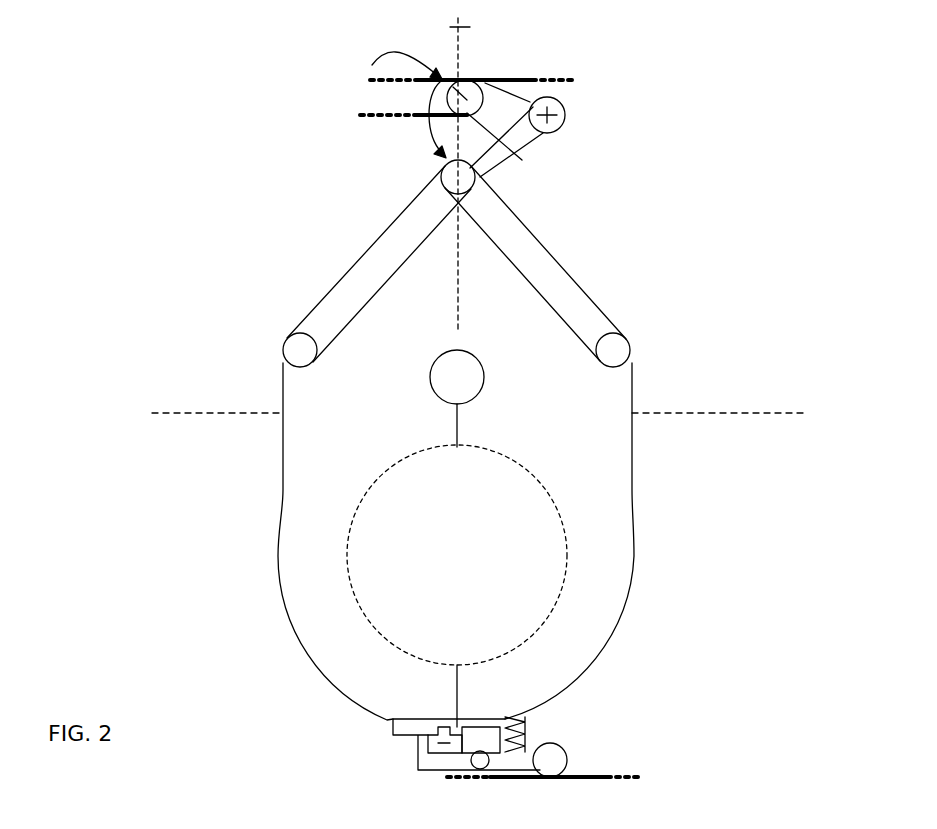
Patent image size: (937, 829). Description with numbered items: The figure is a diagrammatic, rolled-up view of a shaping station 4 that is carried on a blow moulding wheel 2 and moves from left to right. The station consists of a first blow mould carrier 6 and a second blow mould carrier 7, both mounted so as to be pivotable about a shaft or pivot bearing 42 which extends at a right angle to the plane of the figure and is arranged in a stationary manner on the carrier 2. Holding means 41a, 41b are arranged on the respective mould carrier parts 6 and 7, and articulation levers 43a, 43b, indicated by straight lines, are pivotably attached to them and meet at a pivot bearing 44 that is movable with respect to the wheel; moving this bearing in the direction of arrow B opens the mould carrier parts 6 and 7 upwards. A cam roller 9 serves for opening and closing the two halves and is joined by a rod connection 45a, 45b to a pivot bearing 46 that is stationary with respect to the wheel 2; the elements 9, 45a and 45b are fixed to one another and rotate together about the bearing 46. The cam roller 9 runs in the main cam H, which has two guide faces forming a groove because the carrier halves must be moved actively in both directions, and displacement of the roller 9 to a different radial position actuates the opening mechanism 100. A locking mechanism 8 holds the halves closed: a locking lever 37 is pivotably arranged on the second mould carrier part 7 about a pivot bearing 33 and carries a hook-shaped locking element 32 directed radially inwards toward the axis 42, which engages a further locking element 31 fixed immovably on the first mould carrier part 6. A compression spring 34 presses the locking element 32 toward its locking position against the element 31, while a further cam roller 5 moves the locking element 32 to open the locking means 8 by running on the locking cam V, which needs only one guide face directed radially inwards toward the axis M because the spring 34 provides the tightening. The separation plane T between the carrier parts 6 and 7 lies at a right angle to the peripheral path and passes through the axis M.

The blow moulding wheel 2 is at (158, 410).
The shaping station 4 is at (98, 110).
The cam roller 5 is at (553, 753).
The first blow mould carrier 6 is at (303, 583).
The second blow mould carrier 7 is at (607, 604).
The locking mechanism 8 is at (333, 729).
The cam roller 9 is at (405, 105).
The locking element 31 is at (440, 735).
The locking element 32 is at (417, 745).
The pivot bearing 33 is at (478, 750).
The compression spring 34 is at (527, 732).
The locking lever 37 is at (505, 763).
The holding means 41a is at (285, 340).
The holding means 41b is at (613, 350).
The pivot bearing 42 is at (457, 377).
The articulation lever 43a is at (405, 240).
The articulation lever 43b is at (573, 298).
The pivot bearing 44 is at (452, 177).
The rod connection 45a is at (490, 158).
The rod connection 45b is at (507, 97).
The pivot bearing 46 is at (550, 118).
The opening mechanism 100 is at (216, 127).
The axis M is at (455, 27).
The arrow B is at (415, 115).
The main cam H is at (503, 77).
The separation plane T is at (457, 297).
The locking cam V is at (593, 775).